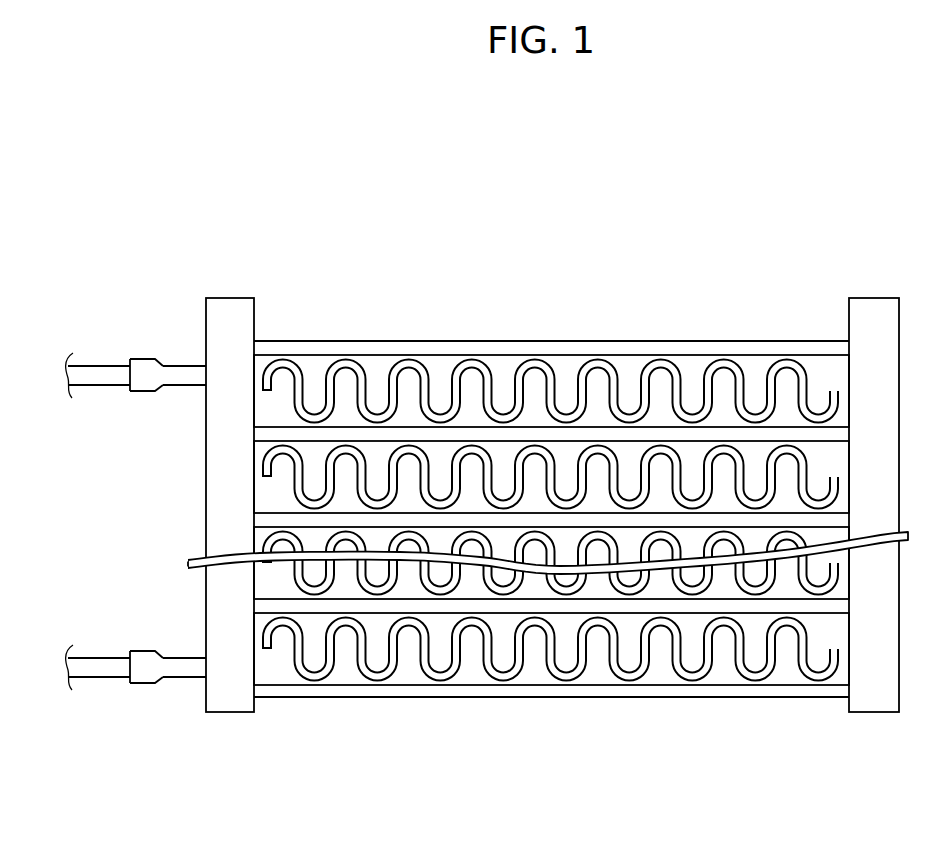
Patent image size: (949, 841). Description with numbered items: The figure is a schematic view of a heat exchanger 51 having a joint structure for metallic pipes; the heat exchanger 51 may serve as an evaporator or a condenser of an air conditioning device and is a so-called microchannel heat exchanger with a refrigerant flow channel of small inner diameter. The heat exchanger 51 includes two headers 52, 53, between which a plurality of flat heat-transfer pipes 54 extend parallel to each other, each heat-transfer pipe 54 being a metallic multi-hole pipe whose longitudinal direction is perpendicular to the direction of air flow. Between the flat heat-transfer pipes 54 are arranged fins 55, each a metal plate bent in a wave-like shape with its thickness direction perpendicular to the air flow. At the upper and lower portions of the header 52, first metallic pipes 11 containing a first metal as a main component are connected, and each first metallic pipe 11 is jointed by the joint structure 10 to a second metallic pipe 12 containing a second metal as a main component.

The heat exchanger 51 is at (757, 175).
The header 52 is at (230, 312).
The header 53 is at (870, 312).
The flat heat-transfer pipe 54 is at (475, 433).
The fin 55 is at (662, 455).
The joint structure 10 is at (145, 348).
The first metallic pipe 11 is at (175, 386).
The second metallic pipe 12 is at (87, 387).